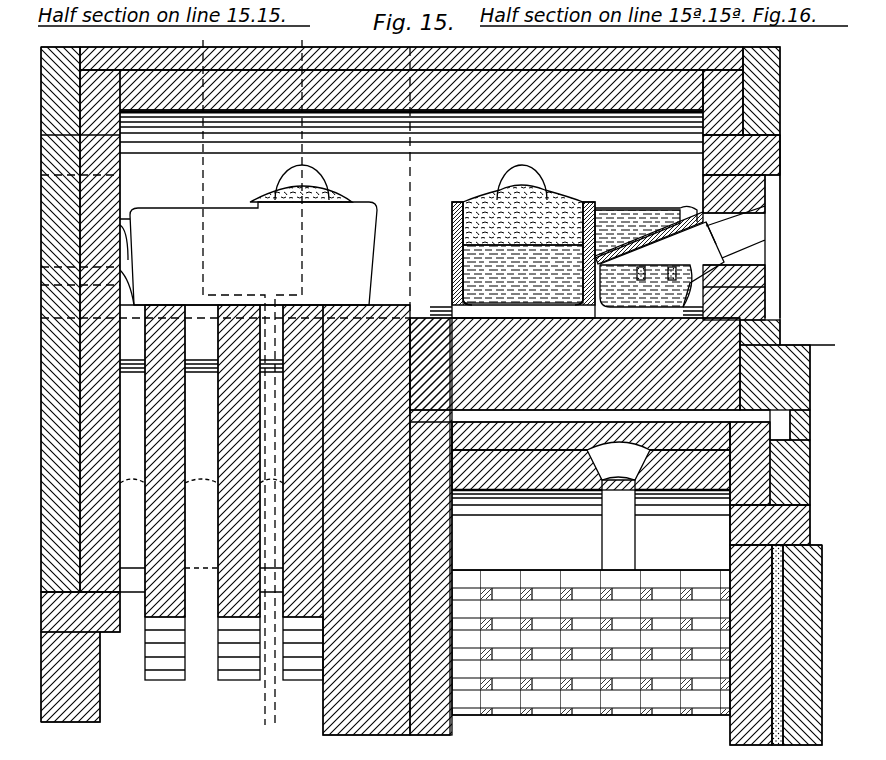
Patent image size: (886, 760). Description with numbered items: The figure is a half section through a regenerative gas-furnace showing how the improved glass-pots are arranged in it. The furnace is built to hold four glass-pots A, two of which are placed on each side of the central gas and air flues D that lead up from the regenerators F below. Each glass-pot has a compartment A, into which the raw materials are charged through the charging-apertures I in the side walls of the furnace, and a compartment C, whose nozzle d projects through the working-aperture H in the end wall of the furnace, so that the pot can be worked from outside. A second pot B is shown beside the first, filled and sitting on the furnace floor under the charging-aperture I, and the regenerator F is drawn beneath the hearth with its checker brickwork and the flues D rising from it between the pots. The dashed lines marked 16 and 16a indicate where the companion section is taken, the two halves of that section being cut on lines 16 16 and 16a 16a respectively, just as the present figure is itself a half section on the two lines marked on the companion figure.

The glass-pot A is at (248, 245).
The crucible B is at (512, 251).
The compartment C is at (438, 260).
The central gas and air flue D is at (201, 476).
The regenerator F is at (591, 462).
The working-aperture H is at (687, 227).
The charging-aperture I is at (411, 182).
The nozzle d is at (423, 241).
The section line 16 16 is at (225, 379).
The section line 16ª 16ª 16a is at (295, 379).